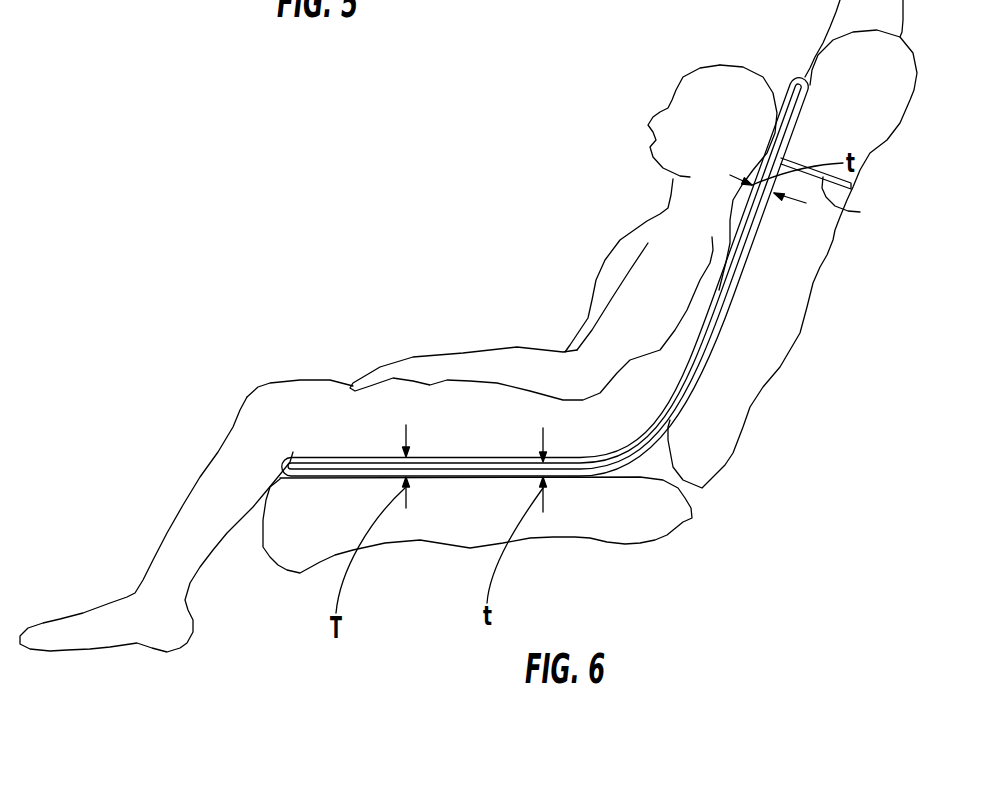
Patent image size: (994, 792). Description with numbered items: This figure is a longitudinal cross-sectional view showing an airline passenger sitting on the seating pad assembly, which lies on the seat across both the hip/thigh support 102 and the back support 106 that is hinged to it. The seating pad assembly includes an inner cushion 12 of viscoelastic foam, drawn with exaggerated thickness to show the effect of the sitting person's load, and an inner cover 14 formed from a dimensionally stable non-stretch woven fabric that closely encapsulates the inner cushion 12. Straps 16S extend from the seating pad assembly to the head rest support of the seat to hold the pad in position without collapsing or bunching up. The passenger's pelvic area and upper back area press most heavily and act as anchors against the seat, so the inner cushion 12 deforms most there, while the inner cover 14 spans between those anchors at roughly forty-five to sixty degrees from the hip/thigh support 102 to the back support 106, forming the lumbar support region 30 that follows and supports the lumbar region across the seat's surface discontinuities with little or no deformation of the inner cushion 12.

The inner cushion 12 is at (703, 337).
The inner cover 14 is at (683, 370).
The straps 16S is at (835, 197).
The lumbar support region 30 is at (580, 282).
The hip/thigh support 102 is at (678, 520).
The back support 106 is at (827, 250).